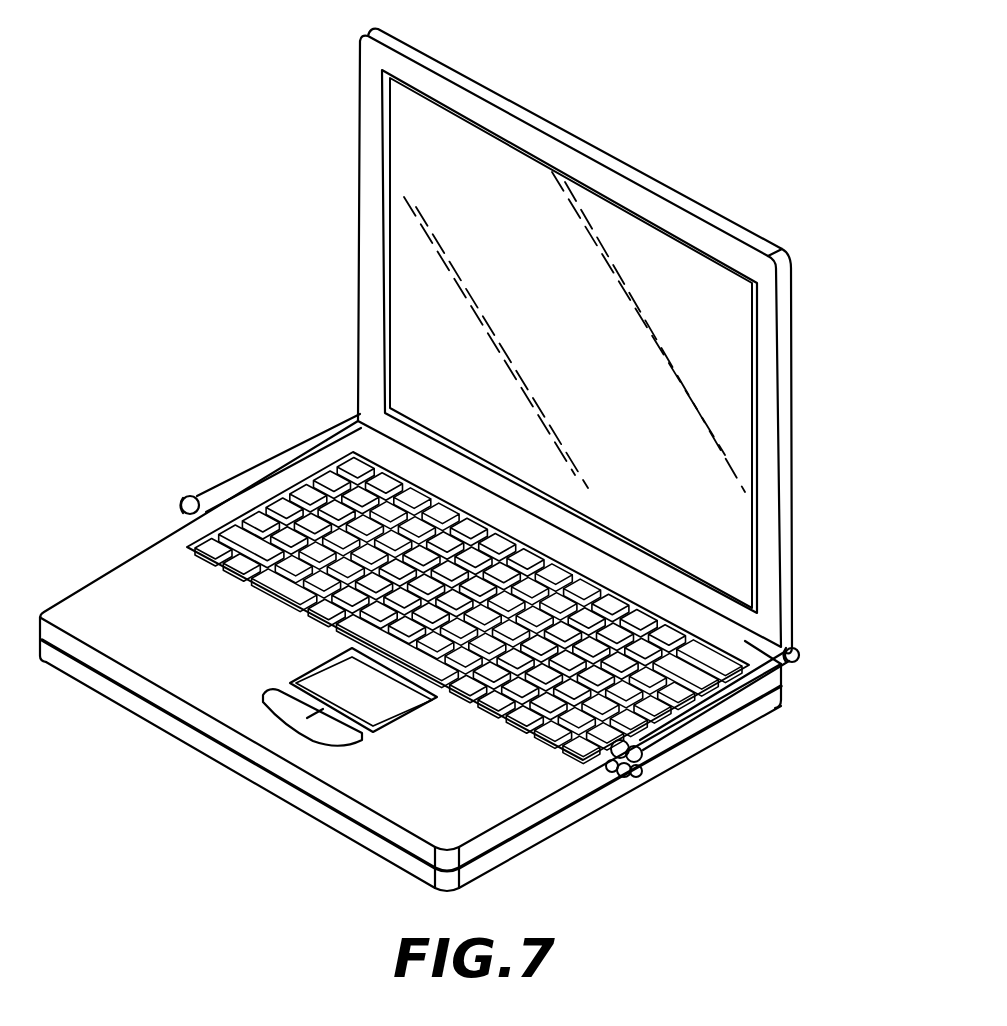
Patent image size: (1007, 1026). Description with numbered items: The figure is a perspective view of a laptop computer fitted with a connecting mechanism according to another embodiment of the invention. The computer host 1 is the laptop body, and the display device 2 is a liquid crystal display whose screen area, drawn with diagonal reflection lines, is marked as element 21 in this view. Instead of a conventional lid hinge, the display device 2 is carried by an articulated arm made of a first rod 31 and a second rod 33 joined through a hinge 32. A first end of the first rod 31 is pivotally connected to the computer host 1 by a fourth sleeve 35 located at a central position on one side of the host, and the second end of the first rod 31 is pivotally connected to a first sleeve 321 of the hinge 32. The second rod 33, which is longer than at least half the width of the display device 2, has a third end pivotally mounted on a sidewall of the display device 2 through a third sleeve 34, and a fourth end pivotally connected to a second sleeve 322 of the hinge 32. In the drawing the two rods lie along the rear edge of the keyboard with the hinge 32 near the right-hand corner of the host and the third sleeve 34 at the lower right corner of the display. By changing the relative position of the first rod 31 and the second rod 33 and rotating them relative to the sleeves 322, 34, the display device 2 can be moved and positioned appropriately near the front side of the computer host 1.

The computer host 1 is at (118, 587).
The display device 2 is at (385, 63).
The display screen 21 is at (443, 138).
The first rod 31 is at (640, 777).
The hinge 32 is at (668, 817).
The first sleeve 321 is at (643, 757).
The second sleeve 322 is at (610, 777).
The second rod 33 is at (737, 685).
The third sleeve 34 is at (800, 659).
The fourth sleeve 35 is at (623, 778).